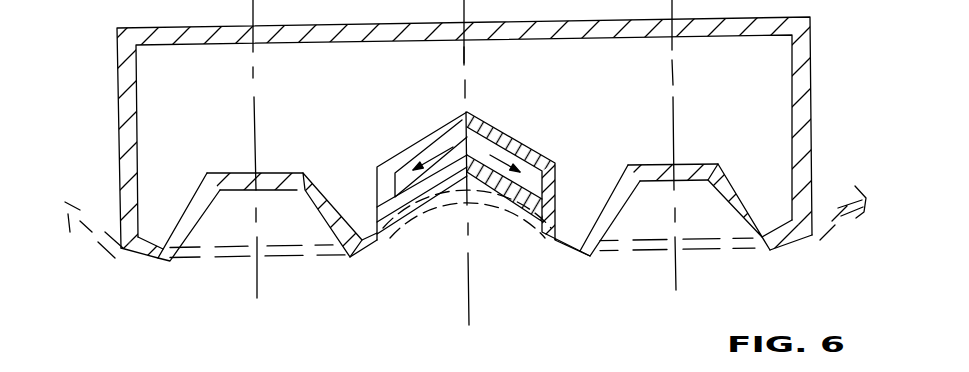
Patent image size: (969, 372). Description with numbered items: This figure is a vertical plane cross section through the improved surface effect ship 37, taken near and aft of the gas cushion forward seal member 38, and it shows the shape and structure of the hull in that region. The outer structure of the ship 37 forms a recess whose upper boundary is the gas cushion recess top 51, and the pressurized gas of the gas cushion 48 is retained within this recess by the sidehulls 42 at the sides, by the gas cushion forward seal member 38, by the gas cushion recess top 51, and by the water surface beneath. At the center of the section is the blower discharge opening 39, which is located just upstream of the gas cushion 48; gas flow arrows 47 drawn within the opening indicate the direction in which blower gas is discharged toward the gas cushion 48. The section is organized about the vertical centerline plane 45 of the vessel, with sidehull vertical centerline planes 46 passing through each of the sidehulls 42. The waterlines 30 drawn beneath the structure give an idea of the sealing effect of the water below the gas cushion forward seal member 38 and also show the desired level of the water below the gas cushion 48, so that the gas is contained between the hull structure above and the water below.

The waterlines 30 is at (83, 226).
The improved surface effect ship 37 is at (811, 88).
The gas cushion forward seal member 38 is at (497, 197).
The blower discharge opening 39 is at (532, 184).
The sidehulls 42 is at (152, 260).
The vertical centerline plane 45 is at (470, 52).
The sidehull vertical centerline planes 46 is at (256, 73).
The gas flow arrows 47 is at (490, 153).
The gas cushion 48 is at (303, 185).
The gas cushion recess top 51 is at (283, 185).